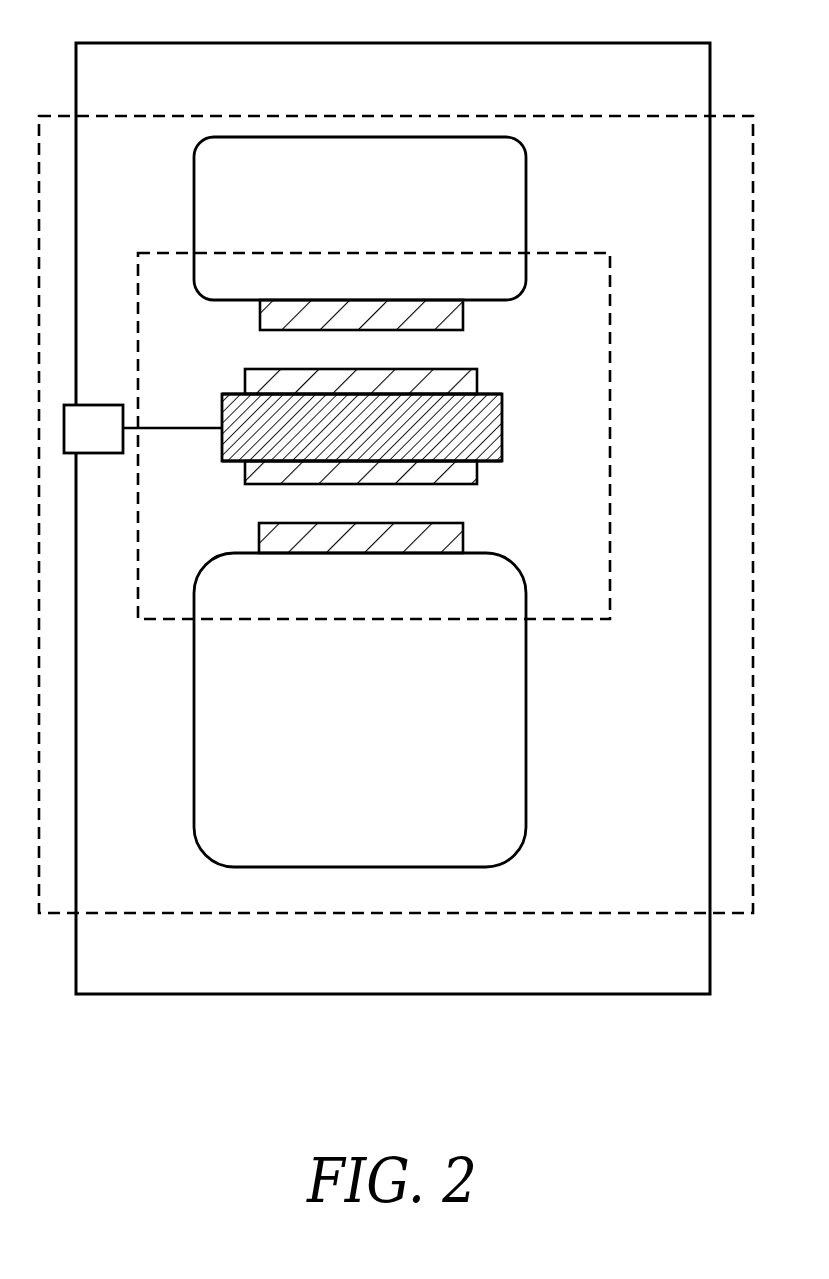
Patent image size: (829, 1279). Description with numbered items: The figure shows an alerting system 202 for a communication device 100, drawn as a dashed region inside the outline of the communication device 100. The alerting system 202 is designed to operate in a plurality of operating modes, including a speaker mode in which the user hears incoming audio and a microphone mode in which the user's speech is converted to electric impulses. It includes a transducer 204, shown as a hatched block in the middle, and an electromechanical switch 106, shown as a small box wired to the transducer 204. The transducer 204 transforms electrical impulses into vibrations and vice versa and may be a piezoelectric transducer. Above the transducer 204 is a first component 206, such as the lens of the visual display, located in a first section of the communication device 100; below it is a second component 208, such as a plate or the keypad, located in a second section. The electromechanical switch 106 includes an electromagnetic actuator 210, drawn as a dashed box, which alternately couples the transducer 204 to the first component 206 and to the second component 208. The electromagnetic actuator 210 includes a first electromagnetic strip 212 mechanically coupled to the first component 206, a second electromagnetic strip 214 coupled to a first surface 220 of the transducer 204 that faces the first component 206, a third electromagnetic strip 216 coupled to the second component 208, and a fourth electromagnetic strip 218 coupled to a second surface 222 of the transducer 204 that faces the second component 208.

The communication device 100 is at (692, 43).
The electromechanical switch 106 is at (106, 405).
The alerting system 202 is at (731, 116).
The transducer 204 is at (503, 428).
The first component 206 is at (527, 195).
The second component 208 is at (527, 710).
The electromagnetic actuator 210 is at (592, 253).
The first electromagnetic strip 212 is at (259, 318).
The second electromagnetic strip 214 is at (245, 378).
The third electromagnetic strip 216 is at (259, 532).
The fourth electromagnetic strip 218 is at (245, 474).
The first surface 220 is at (490, 393).
The second surface 222 is at (490, 462).